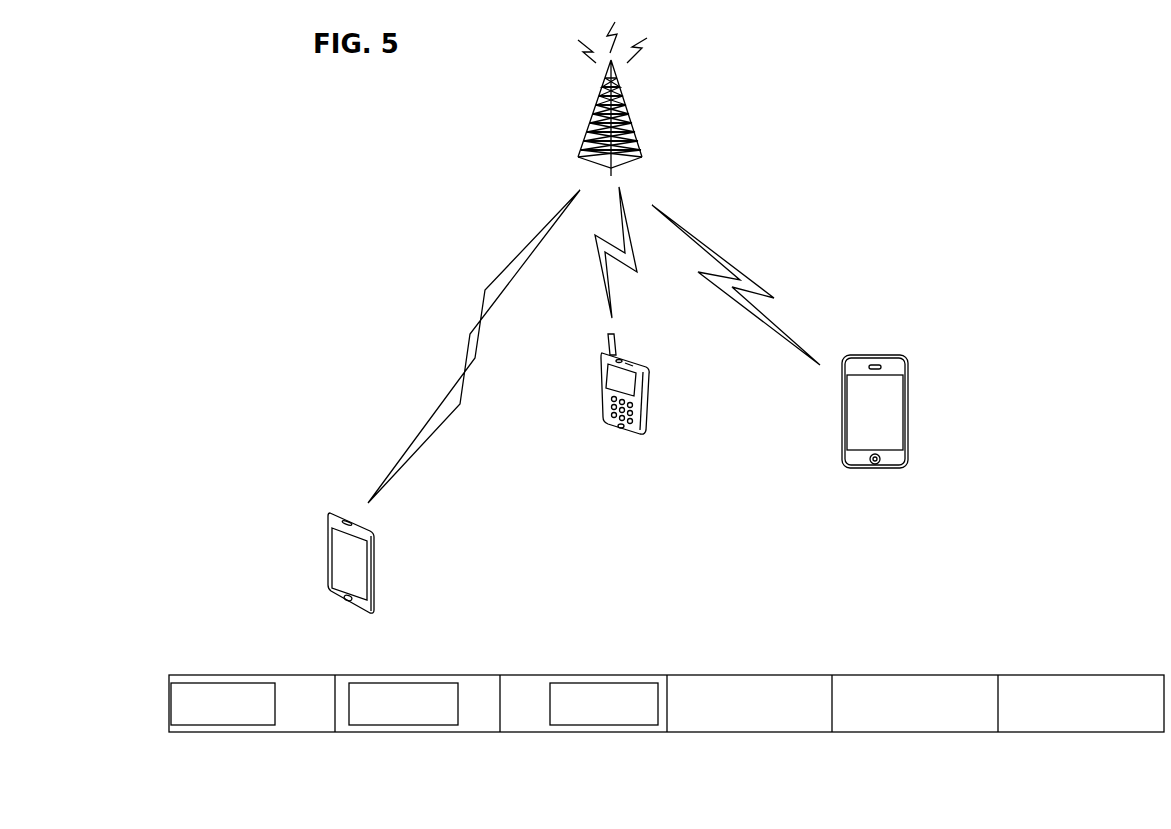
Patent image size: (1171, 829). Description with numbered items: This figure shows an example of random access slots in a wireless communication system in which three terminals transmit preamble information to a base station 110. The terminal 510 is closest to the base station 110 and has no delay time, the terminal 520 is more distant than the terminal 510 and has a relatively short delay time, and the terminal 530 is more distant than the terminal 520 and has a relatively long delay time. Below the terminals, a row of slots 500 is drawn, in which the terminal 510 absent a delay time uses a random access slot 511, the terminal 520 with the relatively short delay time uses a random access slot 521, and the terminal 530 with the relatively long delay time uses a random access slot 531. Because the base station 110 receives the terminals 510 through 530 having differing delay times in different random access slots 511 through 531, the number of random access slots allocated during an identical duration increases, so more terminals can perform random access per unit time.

The base station 110 is at (628, 119).
The radio frame 500 is at (584, 675).
The terminal 510 is at (655, 383).
The terminal 520 is at (909, 410).
The terminal 530 is at (326, 551).
The random access slot 511 is at (222, 725).
The random access slot 521 is at (402, 725).
The random access slot 531 is at (667, 680).